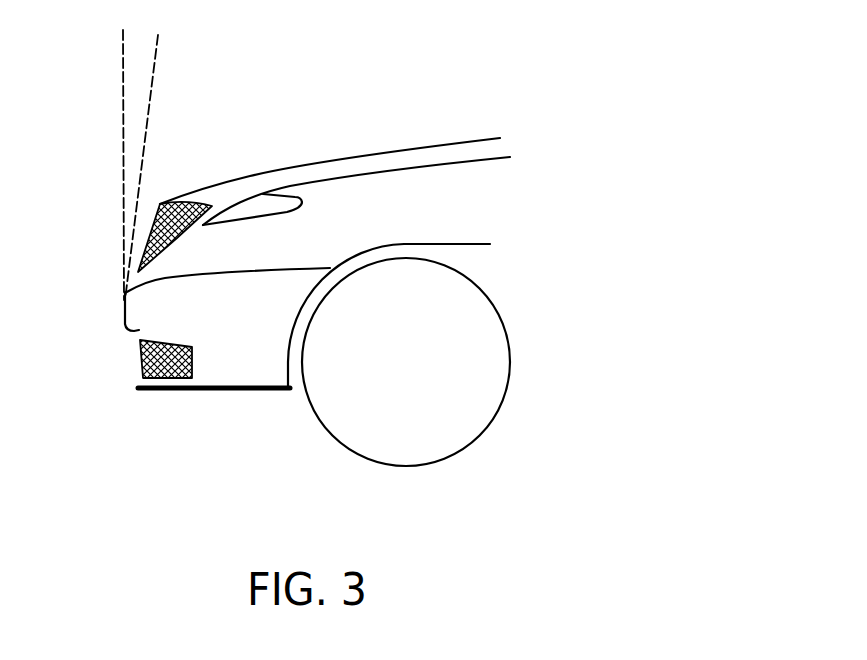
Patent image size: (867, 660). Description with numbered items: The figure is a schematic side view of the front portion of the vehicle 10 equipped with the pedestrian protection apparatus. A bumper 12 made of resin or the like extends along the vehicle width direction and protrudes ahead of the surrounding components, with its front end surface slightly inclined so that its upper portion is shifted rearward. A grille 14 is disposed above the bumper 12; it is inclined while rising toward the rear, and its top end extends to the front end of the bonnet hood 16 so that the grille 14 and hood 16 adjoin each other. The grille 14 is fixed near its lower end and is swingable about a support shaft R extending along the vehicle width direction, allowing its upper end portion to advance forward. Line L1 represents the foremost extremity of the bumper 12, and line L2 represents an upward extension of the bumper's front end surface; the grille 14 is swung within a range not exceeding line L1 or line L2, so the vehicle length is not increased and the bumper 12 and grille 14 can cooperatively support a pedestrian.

The vehicle 10 is at (310, 60).
The bumper 12 is at (130, 331).
The grille 14 is at (161, 204).
The bonnet hood 16 is at (383, 160).
The support shaft R is at (130, 270).
The line representing foremost extremity of the bumper L1 is at (122, 150).
The upward extension line of the front end surface of the bumper L2 is at (149, 153).